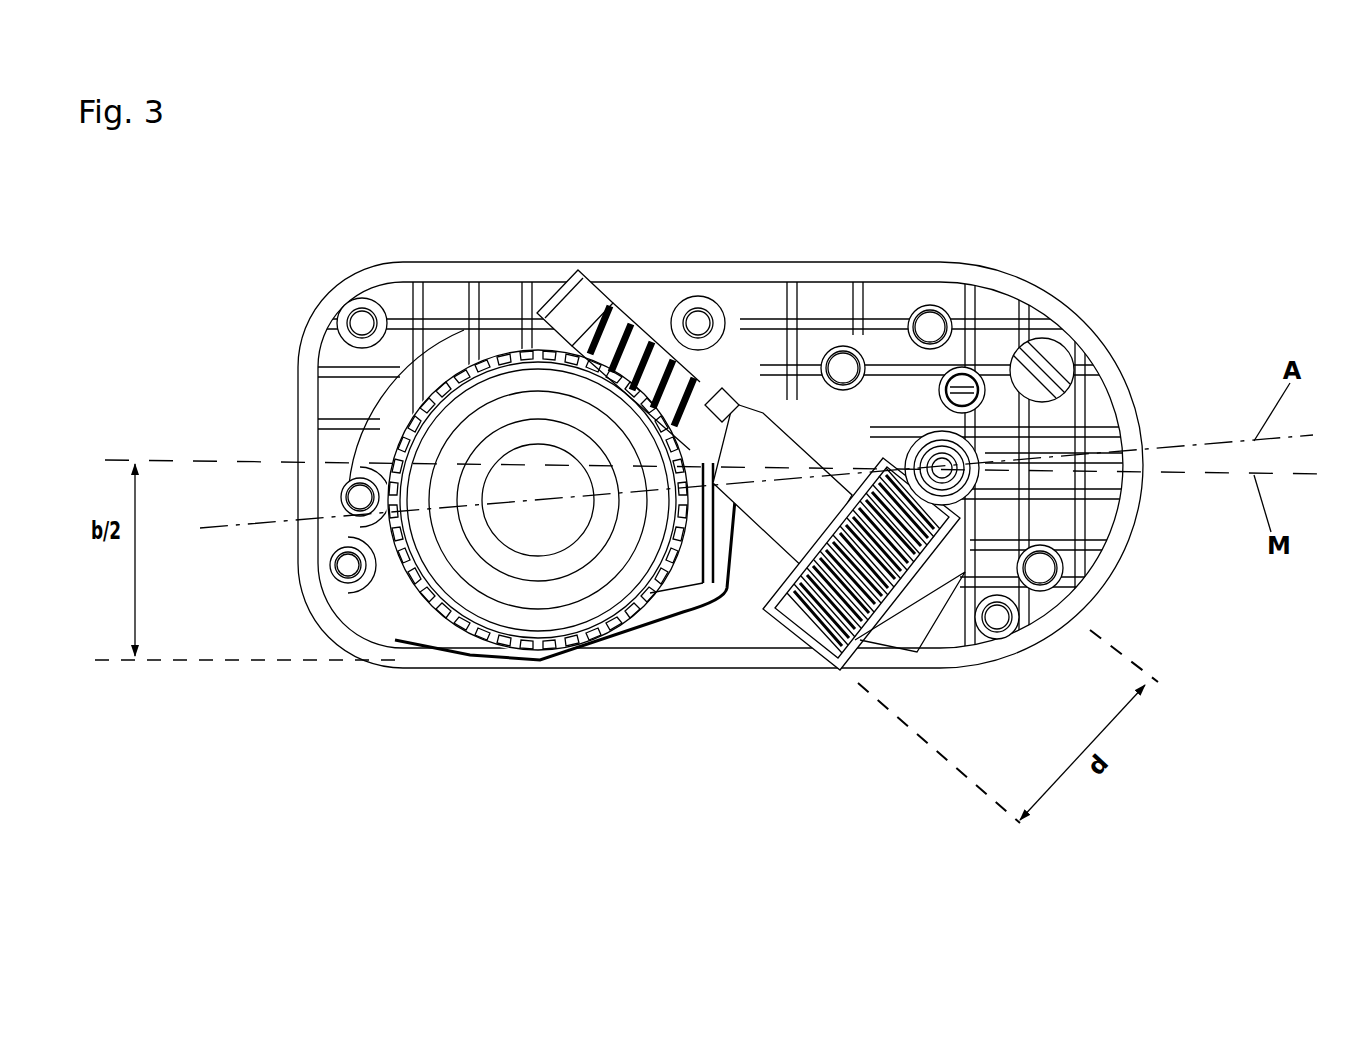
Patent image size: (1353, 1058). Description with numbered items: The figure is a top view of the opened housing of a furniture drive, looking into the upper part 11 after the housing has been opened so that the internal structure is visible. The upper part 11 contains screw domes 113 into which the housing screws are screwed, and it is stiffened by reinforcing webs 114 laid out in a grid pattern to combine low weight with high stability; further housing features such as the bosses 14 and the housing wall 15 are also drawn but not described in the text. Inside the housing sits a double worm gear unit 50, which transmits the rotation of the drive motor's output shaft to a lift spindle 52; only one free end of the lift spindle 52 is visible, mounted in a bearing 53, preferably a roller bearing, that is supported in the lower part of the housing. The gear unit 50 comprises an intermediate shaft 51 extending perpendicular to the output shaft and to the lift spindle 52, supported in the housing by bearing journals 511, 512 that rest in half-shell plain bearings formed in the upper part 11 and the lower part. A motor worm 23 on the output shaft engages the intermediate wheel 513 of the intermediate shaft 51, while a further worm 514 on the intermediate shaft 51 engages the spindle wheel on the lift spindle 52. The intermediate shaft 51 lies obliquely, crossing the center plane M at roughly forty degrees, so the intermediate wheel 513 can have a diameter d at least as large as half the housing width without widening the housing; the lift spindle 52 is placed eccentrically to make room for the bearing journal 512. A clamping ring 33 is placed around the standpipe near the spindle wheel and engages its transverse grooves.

The upper part 11 is at (1005, 290).
The fastening boss 14 is at (357, 317).
The housing wall 15 is at (434, 272).
The motor worm 23 is at (968, 403).
The clamping ring 33 is at (417, 417).
The double worm gear unit 50 is at (783, 747).
The intermediate shaft 51 is at (886, 491).
The lift spindle 52 is at (547, 478).
The bearing 53 is at (533, 602).
The screw domes 113 is at (930, 305).
The reinforcing webs 114 is at (1082, 436).
The bearing journal 511 is at (925, 598).
The bearing journal 512 is at (583, 320).
The intermediate wheel 513 is at (848, 648).
The further worm 514 is at (643, 317).